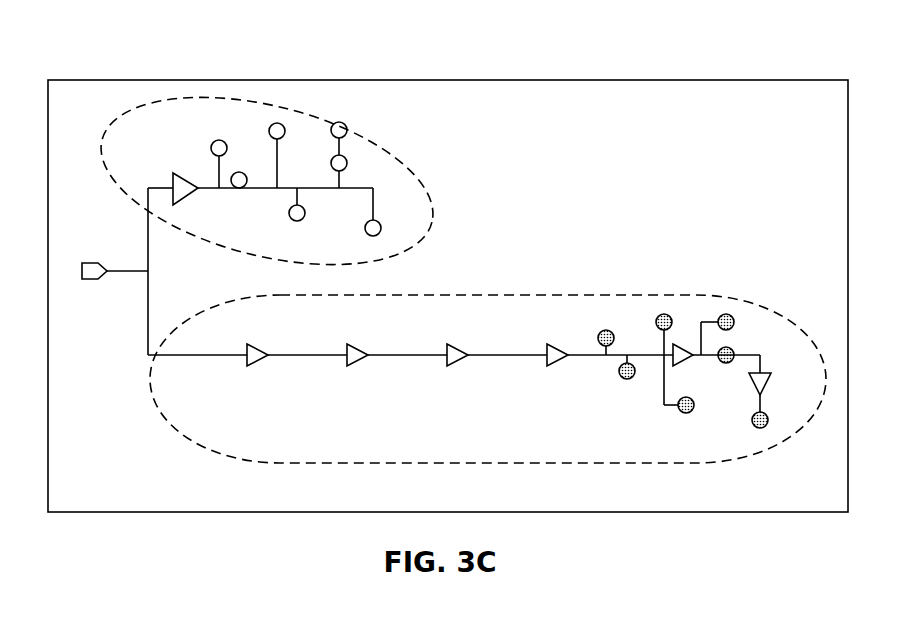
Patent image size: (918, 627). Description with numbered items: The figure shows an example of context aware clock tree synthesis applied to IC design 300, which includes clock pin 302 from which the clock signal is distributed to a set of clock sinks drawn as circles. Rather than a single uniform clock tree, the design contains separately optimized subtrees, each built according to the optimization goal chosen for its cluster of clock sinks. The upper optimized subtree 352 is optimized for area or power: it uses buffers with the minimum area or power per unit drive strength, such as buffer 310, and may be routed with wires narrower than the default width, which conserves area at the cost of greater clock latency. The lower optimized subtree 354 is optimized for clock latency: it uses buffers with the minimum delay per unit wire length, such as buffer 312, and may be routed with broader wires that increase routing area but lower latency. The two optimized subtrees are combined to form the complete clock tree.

The IC design 300 is at (147, 80).
The clock pin 302 is at (103, 271).
The buffer 310 is at (174, 160).
The buffer 312 is at (216, 378).
The optimized subtree 352 is at (307, 181).
The optimized subtree 354 is at (487, 329).